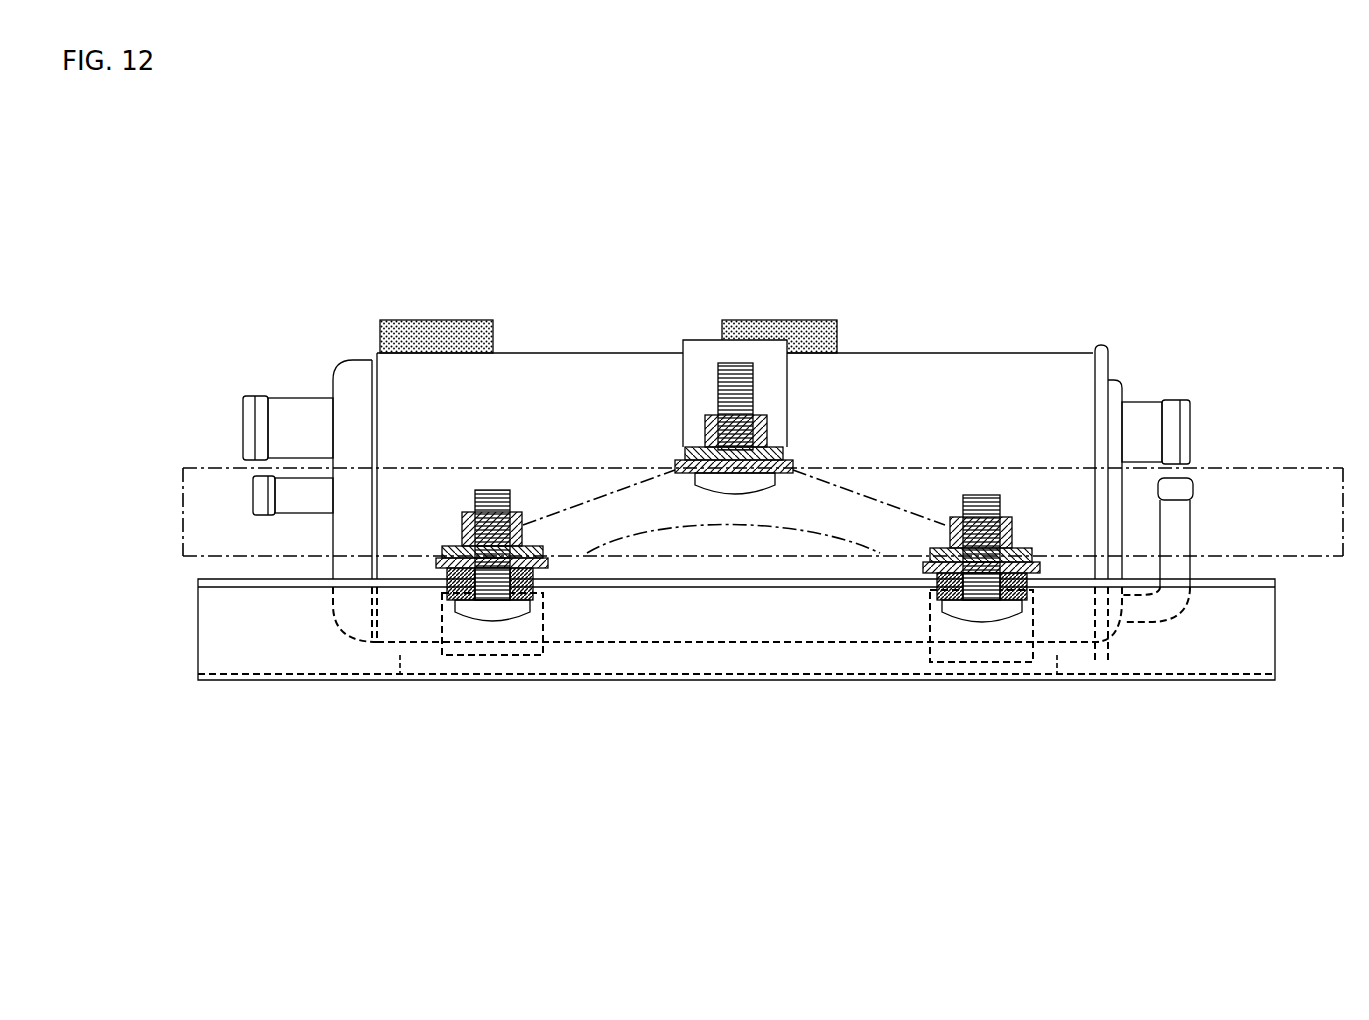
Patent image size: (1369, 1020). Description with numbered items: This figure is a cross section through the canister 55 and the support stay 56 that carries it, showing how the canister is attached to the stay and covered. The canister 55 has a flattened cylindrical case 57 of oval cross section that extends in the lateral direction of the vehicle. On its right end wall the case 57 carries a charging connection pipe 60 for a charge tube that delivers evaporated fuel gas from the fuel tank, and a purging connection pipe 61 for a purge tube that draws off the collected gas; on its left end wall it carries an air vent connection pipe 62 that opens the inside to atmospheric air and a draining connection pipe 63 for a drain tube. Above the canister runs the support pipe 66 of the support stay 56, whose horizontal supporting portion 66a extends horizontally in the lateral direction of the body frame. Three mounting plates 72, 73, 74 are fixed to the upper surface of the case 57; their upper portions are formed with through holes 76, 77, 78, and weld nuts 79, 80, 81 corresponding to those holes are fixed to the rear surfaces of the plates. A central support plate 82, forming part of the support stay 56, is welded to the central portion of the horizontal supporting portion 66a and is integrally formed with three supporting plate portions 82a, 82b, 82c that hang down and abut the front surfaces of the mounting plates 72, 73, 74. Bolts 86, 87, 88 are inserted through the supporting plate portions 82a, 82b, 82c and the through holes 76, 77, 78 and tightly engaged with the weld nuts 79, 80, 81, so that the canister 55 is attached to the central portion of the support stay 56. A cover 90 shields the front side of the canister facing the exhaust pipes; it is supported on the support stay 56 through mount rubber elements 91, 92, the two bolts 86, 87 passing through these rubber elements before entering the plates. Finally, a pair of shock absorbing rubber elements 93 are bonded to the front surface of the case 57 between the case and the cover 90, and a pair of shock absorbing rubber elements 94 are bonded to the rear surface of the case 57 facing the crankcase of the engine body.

The canister 55 is at (712, 492).
The support stay 56 is at (204, 458).
The case 57 is at (655, 352).
The charging connection pipe 60 is at (262, 495).
The purging connection pipe 61 is at (298, 400).
The air vent connection pipe 62 is at (1142, 412).
The draining connection pipe 63 is at (1180, 535).
The support pipe 66 is at (513, 458).
The horizontal supporting portion 66a is at (1018, 468).
The mounting plate 72 is at (1033, 554).
The mounting plate 73 is at (462, 533).
The mounting plate 74 is at (700, 450).
The through hole 76 is at (984, 612).
The through hole 77 is at (497, 603).
The through hole 78 is at (730, 496).
The weld nut 79 is at (953, 515).
The weld nut 80 is at (462, 520).
The weld nut 81 is at (760, 420).
The central support plate 82 is at (582, 525).
The supporting plate portion 82a is at (925, 578).
The supporting plate portion 82b is at (550, 565).
The supporting plate portion 82c is at (792, 468).
The bolt 86 is at (973, 620).
The bolt 87 is at (482, 612).
The bolt 88 is at (693, 497).
The cover 90 is at (832, 668).
The mount rubber element 91 is at (1100, 600).
The mount rubber element 92 is at (442, 590).
The shock absorbing rubber element 93 is at (410, 676).
The shock absorbing rubber element 94 is at (463, 320).